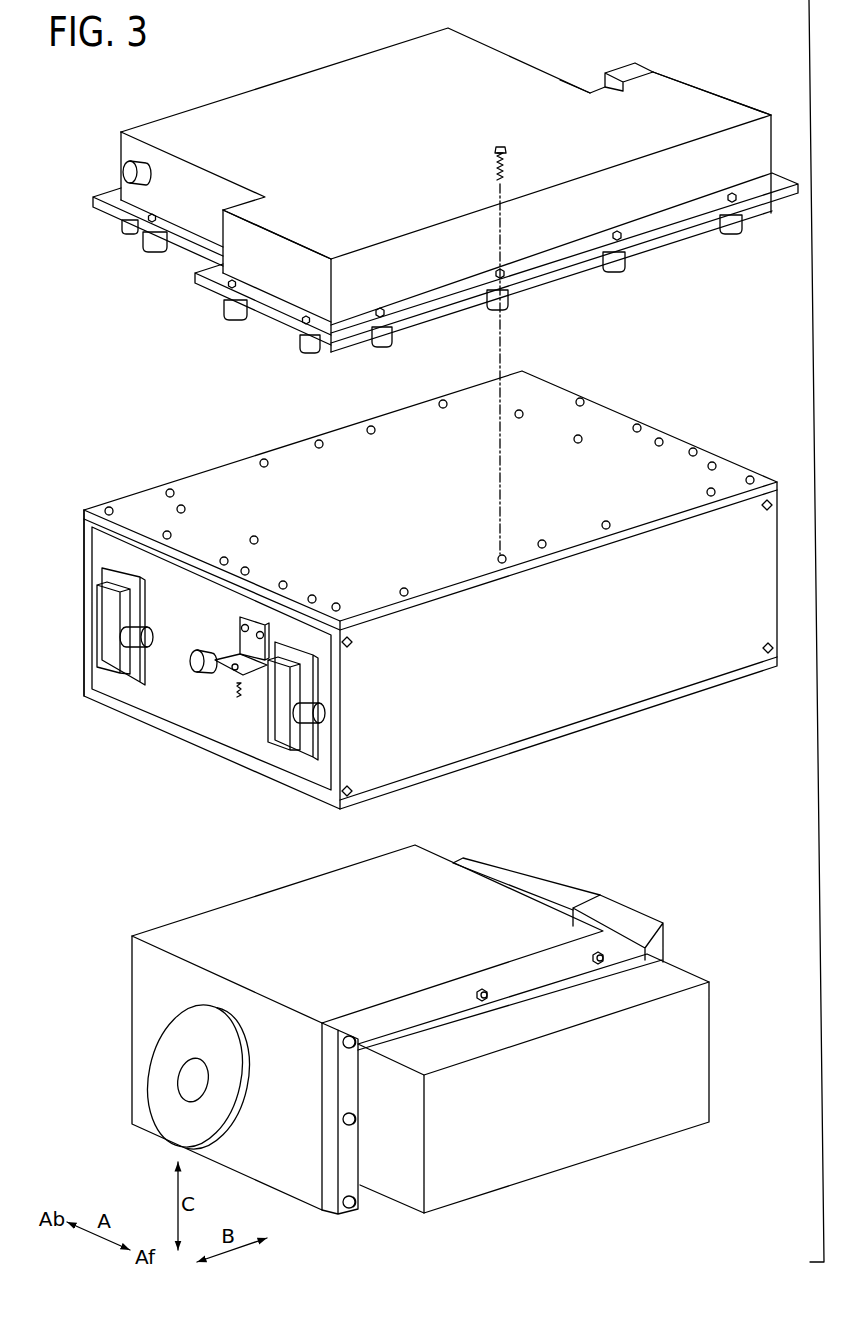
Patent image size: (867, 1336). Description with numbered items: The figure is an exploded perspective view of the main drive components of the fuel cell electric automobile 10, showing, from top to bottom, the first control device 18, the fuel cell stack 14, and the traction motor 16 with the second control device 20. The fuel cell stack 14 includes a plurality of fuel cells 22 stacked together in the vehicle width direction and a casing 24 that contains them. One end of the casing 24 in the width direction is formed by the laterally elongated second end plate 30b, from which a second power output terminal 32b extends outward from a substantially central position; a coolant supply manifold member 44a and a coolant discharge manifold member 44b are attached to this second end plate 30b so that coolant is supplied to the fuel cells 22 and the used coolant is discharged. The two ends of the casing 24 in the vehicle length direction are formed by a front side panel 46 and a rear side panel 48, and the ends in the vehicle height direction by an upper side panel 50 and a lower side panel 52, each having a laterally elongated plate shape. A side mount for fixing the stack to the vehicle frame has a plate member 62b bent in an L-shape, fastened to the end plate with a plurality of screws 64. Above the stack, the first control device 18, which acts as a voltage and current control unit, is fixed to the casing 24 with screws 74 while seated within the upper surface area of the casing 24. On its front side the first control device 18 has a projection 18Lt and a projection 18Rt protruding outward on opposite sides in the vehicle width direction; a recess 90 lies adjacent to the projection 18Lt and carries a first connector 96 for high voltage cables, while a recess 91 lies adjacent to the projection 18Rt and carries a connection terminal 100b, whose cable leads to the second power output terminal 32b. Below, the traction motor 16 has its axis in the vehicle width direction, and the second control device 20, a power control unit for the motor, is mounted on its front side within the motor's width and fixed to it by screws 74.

The fuel cell electric automobile 10 is at (722, 32).
The fuel cell stack 14 is at (663, 411).
The traction motor 16 is at (547, 852).
The first control device 18 is at (316, 66).
The projection 18Lt is at (722, 108).
The projection 18Rt is at (313, 225).
The second control device 20 is at (613, 1135).
The fuel cells 22 is at (600, 417).
The casing 24 is at (693, 443).
The second end plate 30b is at (126, 693).
The second power output terminal 32b is at (191, 670).
The coolant supply manifold member 44a is at (105, 615).
The coolant discharge manifold member 44b is at (288, 687).
The front side panel 46 is at (664, 673).
The rear side panel 48 is at (84, 551).
The upper side panel 50 is at (213, 483).
The lower side panel 52 is at (746, 673).
The plate member 62b is at (259, 617).
The screws 64 is at (241, 626).
The screws 74 is at (507, 146).
The recess 90 is at (574, 84).
The recess 91 is at (187, 217).
The first connector 96 is at (636, 62).
The connection terminal 100b is at (123, 172).